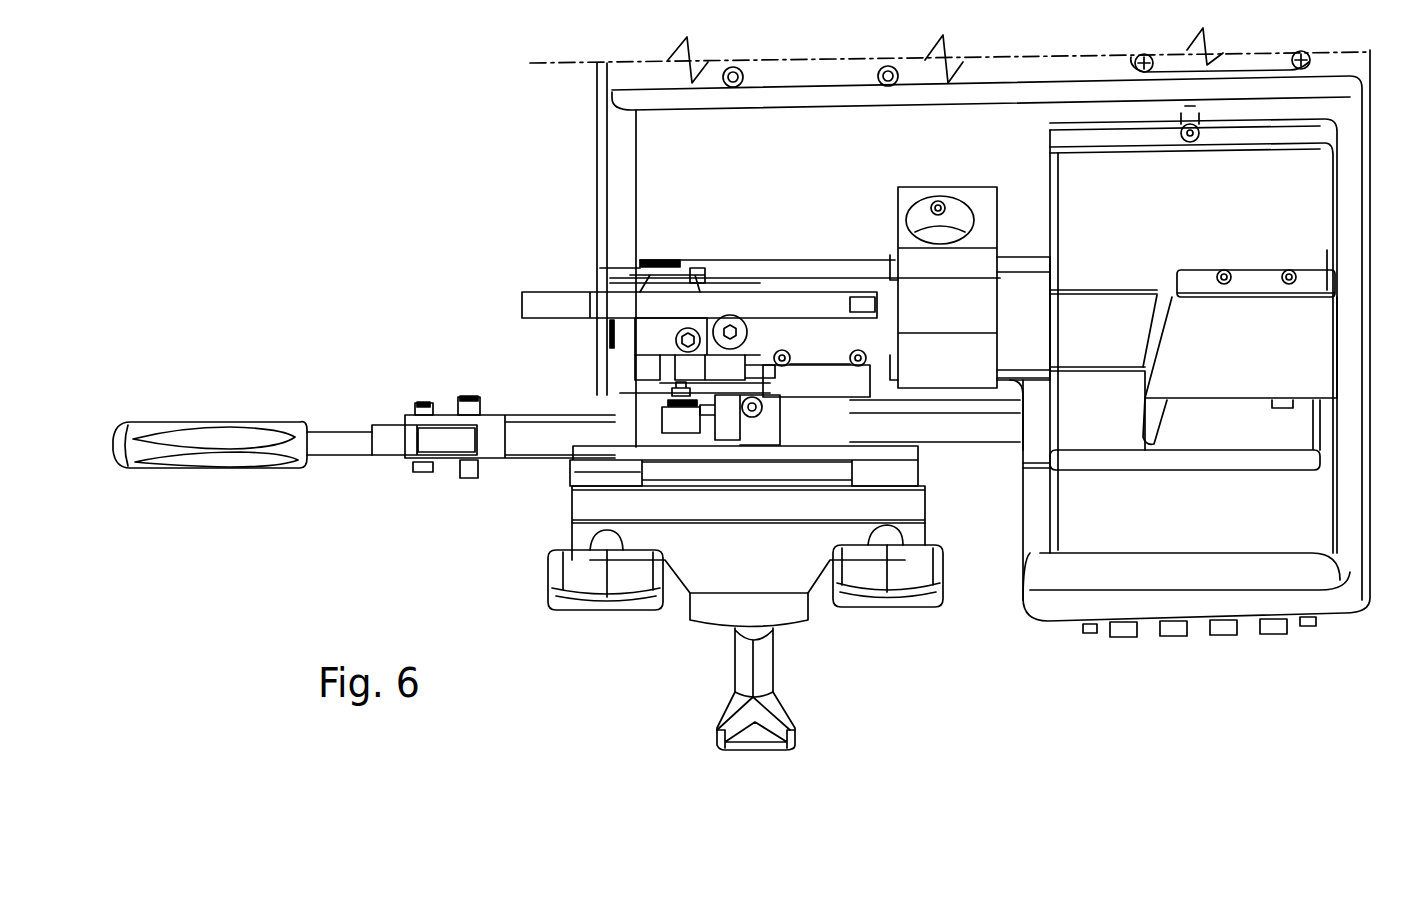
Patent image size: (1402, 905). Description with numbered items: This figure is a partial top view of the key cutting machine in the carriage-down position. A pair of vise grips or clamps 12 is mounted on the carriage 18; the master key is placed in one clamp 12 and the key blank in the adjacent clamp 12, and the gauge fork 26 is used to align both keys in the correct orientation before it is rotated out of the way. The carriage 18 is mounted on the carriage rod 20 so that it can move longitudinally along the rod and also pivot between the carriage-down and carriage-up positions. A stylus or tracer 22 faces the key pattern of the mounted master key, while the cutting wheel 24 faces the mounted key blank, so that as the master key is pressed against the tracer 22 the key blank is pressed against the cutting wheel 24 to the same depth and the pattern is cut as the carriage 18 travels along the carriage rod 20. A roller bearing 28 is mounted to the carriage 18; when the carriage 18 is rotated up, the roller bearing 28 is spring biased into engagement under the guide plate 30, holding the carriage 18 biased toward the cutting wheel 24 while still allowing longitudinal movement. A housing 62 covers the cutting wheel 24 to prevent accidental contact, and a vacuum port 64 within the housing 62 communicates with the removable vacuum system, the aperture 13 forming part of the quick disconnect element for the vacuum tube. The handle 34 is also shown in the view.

The vise grips or clamps 12 is at (920, 488).
The aperture 13 is at (944, 205).
The carriage 18 is at (918, 448).
The carriage rod 20 is at (537, 440).
The stylus or tracer 22 is at (660, 388).
The cutting wheel 24 is at (942, 392).
The gauge fork 26 is at (588, 302).
The roller bearing 28 is at (750, 418).
The guide plate 30 is at (836, 391).
The handle 34 is at (175, 424).
The housing 62 is at (958, 304).
The vacuum port 64 is at (898, 210).